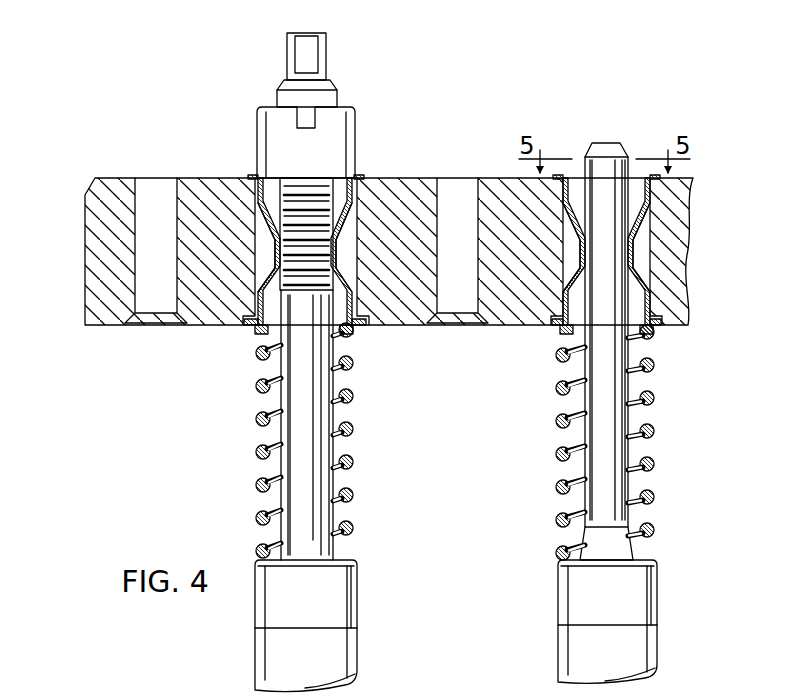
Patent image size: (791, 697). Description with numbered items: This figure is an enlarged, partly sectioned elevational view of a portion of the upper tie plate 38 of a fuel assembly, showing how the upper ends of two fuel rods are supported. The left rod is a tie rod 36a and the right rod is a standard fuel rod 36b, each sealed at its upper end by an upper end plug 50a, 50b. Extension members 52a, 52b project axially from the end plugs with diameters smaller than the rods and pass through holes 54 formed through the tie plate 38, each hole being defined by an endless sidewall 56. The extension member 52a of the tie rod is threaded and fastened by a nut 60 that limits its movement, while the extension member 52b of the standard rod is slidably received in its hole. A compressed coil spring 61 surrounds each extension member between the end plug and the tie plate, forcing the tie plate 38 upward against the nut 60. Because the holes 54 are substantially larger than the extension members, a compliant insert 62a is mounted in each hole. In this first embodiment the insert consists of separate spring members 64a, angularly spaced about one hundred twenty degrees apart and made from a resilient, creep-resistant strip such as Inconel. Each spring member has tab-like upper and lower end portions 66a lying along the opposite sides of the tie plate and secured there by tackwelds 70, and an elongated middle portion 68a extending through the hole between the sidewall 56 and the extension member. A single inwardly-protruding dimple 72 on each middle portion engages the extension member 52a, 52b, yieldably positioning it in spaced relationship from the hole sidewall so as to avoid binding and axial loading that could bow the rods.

The upper tie plate 38 is at (113, 178).
The nut 60 is at (357, 106).
The hole 54 is at (350, 241).
The extension member of tie rod 52a is at (308, 490).
The extension member of standard fuel rod 52b is at (613, 457).
The hole sidewall 56 is at (292, 300).
The coil spring 61 is at (354, 522).
The upper end plug of tie rod 50a is at (325, 589).
The upper end plug of standard fuel rod 50b is at (630, 590).
The tie rod 36a is at (357, 650).
The standard fuel rod 36b is at (658, 648).
The compliant insert 62a is at (242, 318).
The spring member 64a is at (255, 278).
The end portion 66a is at (252, 176).
The middle portion 68a is at (262, 218).
The tackweld 70 is at (250, 177).
The dimple 72 is at (270, 250).